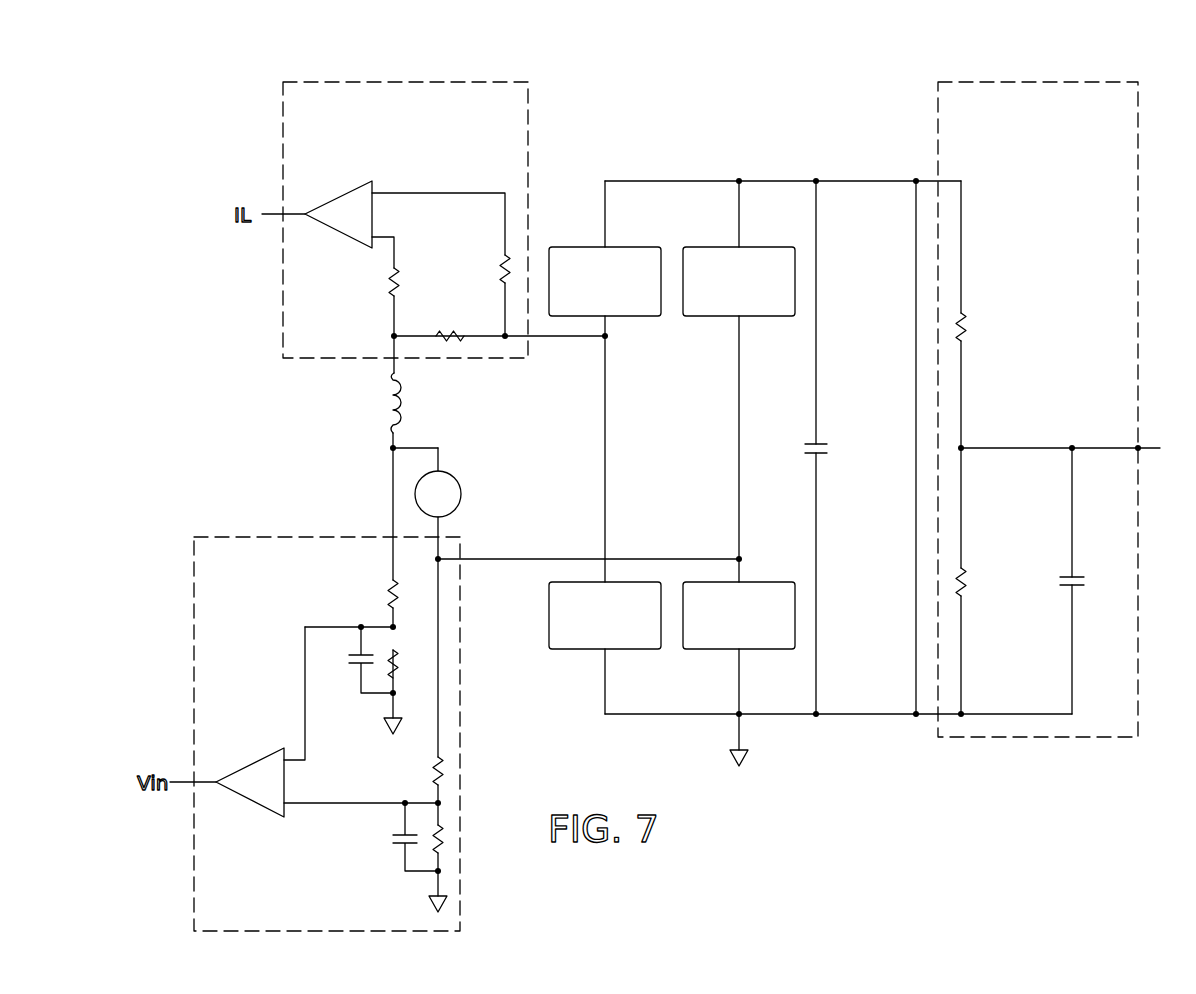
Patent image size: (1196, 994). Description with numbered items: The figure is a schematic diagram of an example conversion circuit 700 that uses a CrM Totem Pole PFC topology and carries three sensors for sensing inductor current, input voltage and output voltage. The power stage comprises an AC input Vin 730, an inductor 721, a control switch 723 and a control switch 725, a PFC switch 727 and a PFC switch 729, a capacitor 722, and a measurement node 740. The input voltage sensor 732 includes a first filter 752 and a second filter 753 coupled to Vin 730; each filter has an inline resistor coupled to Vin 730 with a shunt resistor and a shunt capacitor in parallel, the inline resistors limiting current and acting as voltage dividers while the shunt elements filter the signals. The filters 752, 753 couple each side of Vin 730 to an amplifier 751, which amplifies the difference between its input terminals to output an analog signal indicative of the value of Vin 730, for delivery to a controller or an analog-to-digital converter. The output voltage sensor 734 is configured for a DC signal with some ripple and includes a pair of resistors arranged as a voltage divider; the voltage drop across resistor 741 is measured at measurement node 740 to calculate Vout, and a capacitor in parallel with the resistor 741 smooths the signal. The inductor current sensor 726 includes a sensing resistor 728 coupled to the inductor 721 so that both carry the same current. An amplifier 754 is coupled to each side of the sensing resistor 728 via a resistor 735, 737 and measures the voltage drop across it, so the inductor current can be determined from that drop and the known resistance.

The conversion circuit 700 is at (197, 144).
The inductor 721 is at (385, 404).
The capacitor 722 is at (829, 448).
The control switch 723 is at (639, 246).
The control switch 725 is at (638, 651).
The inductor current sensor 726 is at (391, 78).
The PFC switch 727 is at (770, 651).
The sensing resistor 728 is at (449, 329).
The PFC switch 729 is at (772, 246).
The AC input Vin 730 is at (462, 490).
The input voltage sensor 732 is at (272, 537).
The output voltage sensor 734 is at (1052, 80).
The resistor 735 is at (386, 283).
The resistor 737 is at (499, 262).
The measurement node 740 is at (1145, 445).
The resistor 741 is at (968, 582).
The amplifier 751 is at (251, 800).
The first filter 752 is at (379, 843).
The second filter 753 is at (366, 735).
The amplifier 754 is at (341, 196).